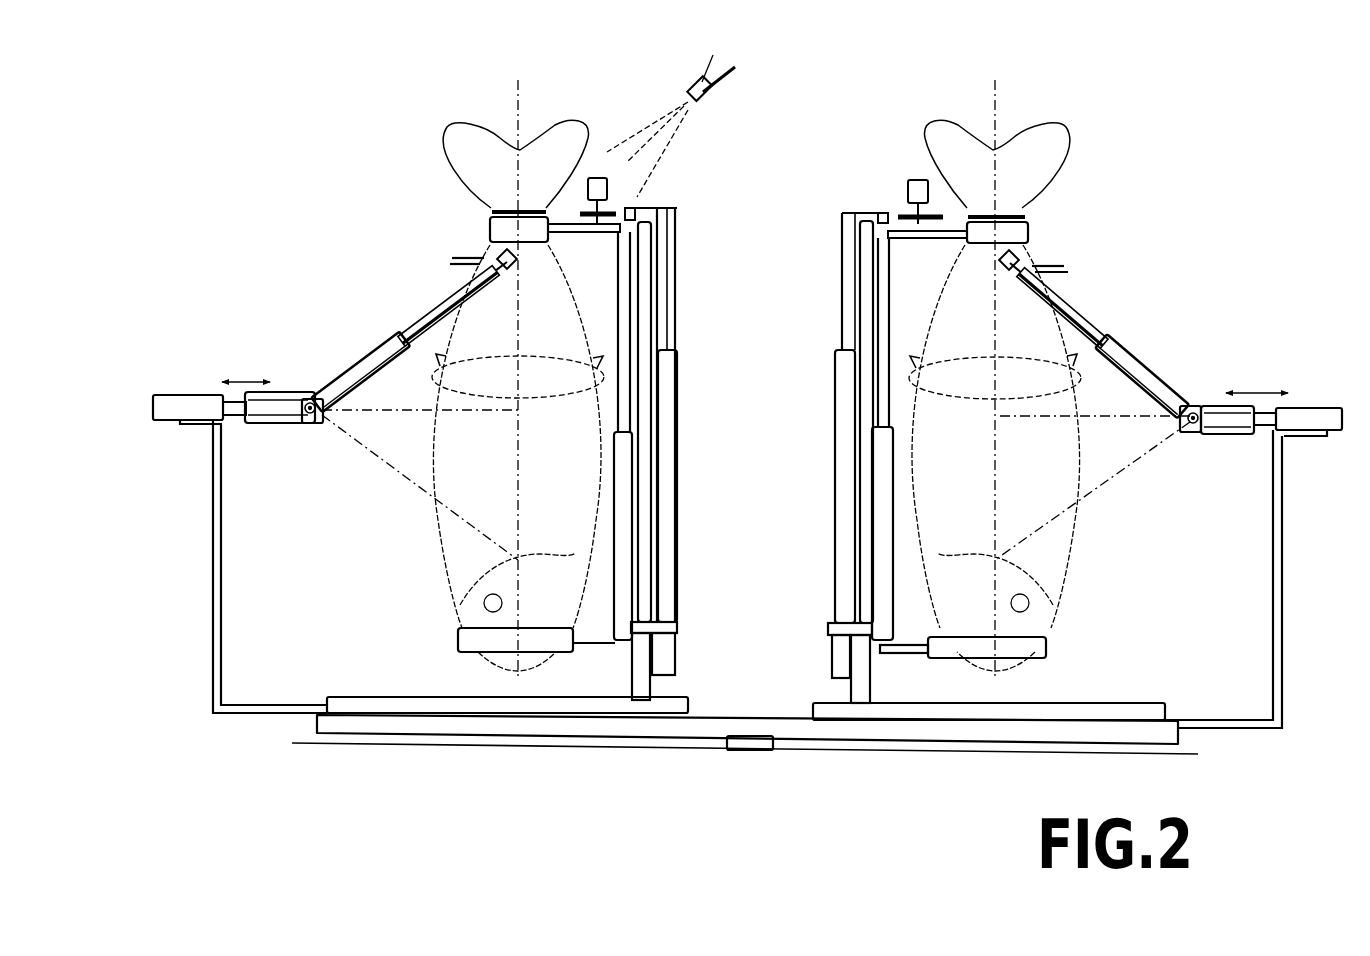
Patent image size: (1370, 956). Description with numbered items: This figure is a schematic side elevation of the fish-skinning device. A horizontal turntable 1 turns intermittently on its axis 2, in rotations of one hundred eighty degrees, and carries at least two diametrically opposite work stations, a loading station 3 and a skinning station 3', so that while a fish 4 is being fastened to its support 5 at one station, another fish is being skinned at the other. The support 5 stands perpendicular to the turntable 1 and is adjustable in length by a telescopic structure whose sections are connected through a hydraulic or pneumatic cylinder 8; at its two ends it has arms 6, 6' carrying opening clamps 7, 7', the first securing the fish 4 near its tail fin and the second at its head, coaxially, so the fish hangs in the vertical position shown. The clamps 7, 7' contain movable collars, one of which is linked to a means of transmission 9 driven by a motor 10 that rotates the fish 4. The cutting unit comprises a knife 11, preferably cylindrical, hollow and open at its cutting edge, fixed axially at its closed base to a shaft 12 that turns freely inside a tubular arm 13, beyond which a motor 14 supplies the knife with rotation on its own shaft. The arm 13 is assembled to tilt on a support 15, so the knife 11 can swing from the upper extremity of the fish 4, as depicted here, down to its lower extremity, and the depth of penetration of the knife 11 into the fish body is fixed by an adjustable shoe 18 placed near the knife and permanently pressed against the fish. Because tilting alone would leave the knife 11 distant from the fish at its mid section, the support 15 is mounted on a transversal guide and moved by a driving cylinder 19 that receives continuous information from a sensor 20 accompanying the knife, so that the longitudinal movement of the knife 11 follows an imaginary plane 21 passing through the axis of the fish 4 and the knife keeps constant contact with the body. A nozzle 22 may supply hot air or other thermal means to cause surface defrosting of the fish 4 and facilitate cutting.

The horizontal turntable 1 is at (498, 725).
The axis 2 is at (732, 744).
The loading work station 3 is at (507, 756).
The skinning work station 3' is at (989, 767).
The fish 4 is at (575, 453).
The support 5 is at (640, 570).
The arm 6 is at (636, 254).
The arm 6' is at (587, 728).
The opening clamp 7 is at (458, 212).
The opening clamp 7' is at (491, 721).
The hydraulic or pneumatic cylinder 8 is at (665, 500).
The means of transmission 9 is at (508, 212).
The motor 10 is at (595, 178).
The knife 11 is at (514, 262).
The shaft 12 is at (473, 302).
The tubular arm 13 is at (385, 345).
The motor 14 is at (318, 413).
The support 15 is at (287, 392).
The adjustable shoe 18 is at (520, 272).
The driving cylinder 19 is at (203, 393).
The sensor 20 is at (487, 258).
The imaginary plane 21 is at (520, 367).
The nozzle 22 is at (703, 78).